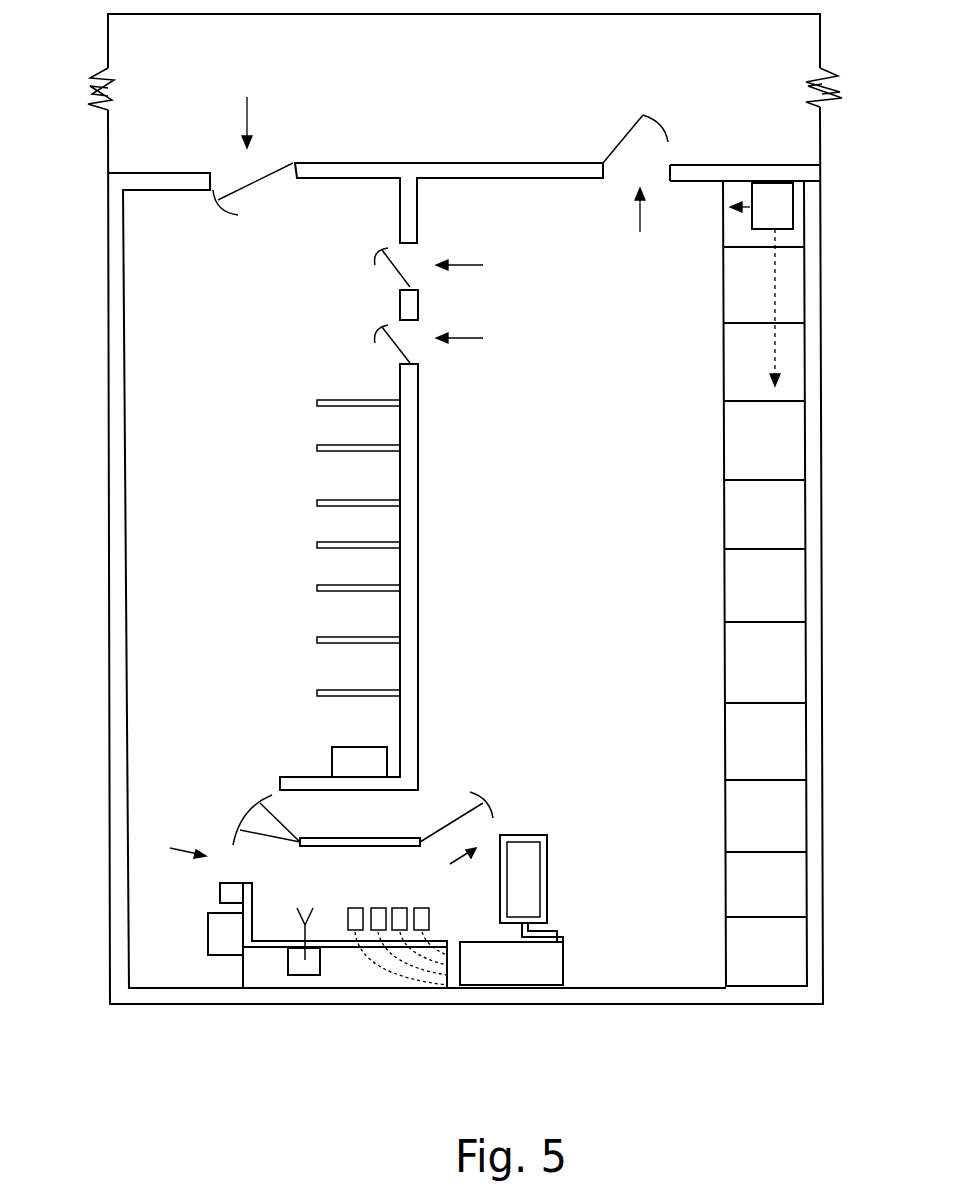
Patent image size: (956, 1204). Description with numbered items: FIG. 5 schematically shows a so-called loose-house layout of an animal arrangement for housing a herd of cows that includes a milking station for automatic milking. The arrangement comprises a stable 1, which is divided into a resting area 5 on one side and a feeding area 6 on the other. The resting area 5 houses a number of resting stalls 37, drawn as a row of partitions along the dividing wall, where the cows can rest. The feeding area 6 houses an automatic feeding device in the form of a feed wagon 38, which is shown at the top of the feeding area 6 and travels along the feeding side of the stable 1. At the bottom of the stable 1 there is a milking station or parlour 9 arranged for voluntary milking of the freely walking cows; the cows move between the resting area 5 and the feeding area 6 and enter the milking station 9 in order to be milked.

The stable 1 is at (97, 825).
The resting area 5 is at (216, 523).
The feeding area 6 is at (523, 520).
The milking station 9 is at (412, 902).
The resting stalls 37 is at (333, 427).
The feed wagon 38 is at (808, 210).